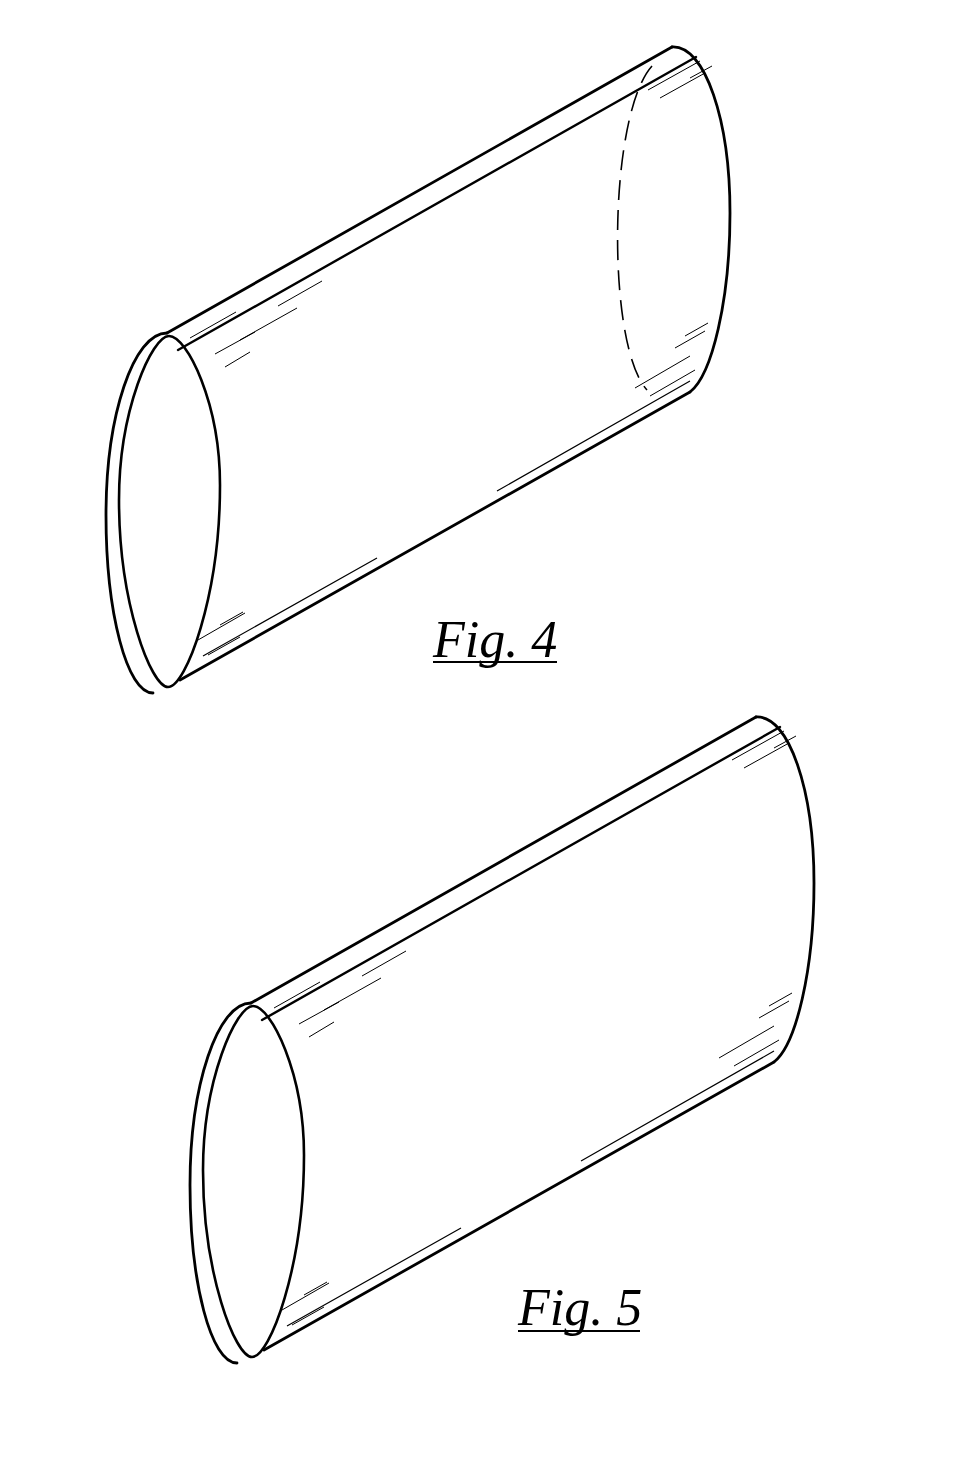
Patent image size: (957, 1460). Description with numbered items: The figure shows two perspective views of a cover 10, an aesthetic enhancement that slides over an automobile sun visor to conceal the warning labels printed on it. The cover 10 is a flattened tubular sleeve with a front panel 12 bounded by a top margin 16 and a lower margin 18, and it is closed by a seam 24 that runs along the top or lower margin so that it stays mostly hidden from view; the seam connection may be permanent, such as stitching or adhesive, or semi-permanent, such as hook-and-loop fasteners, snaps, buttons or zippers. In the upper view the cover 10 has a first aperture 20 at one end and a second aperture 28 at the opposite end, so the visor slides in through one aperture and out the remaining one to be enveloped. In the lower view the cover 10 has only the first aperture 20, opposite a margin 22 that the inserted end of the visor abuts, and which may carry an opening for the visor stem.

In FIG. 4, the cover 10 is at (424, 364).
In FIG. 5, the cover 10 is at (515, 986).
In FIG. 4, the front panel 12 is at (248, 590).
In FIG. 4, the top margin 16 is at (401, 202).
In FIG. 4, the lower margin 18 is at (450, 528).
In FIG. 4, the first aperture 20 is at (167, 512).
In FIG. 5, the first aperture 20 is at (250, 1182).
In FIG. 5, the margin 22 is at (815, 884).
In FIG. 4, the seam 24 is at (262, 278).
In FIG. 4, the second aperture 28 is at (670, 240).